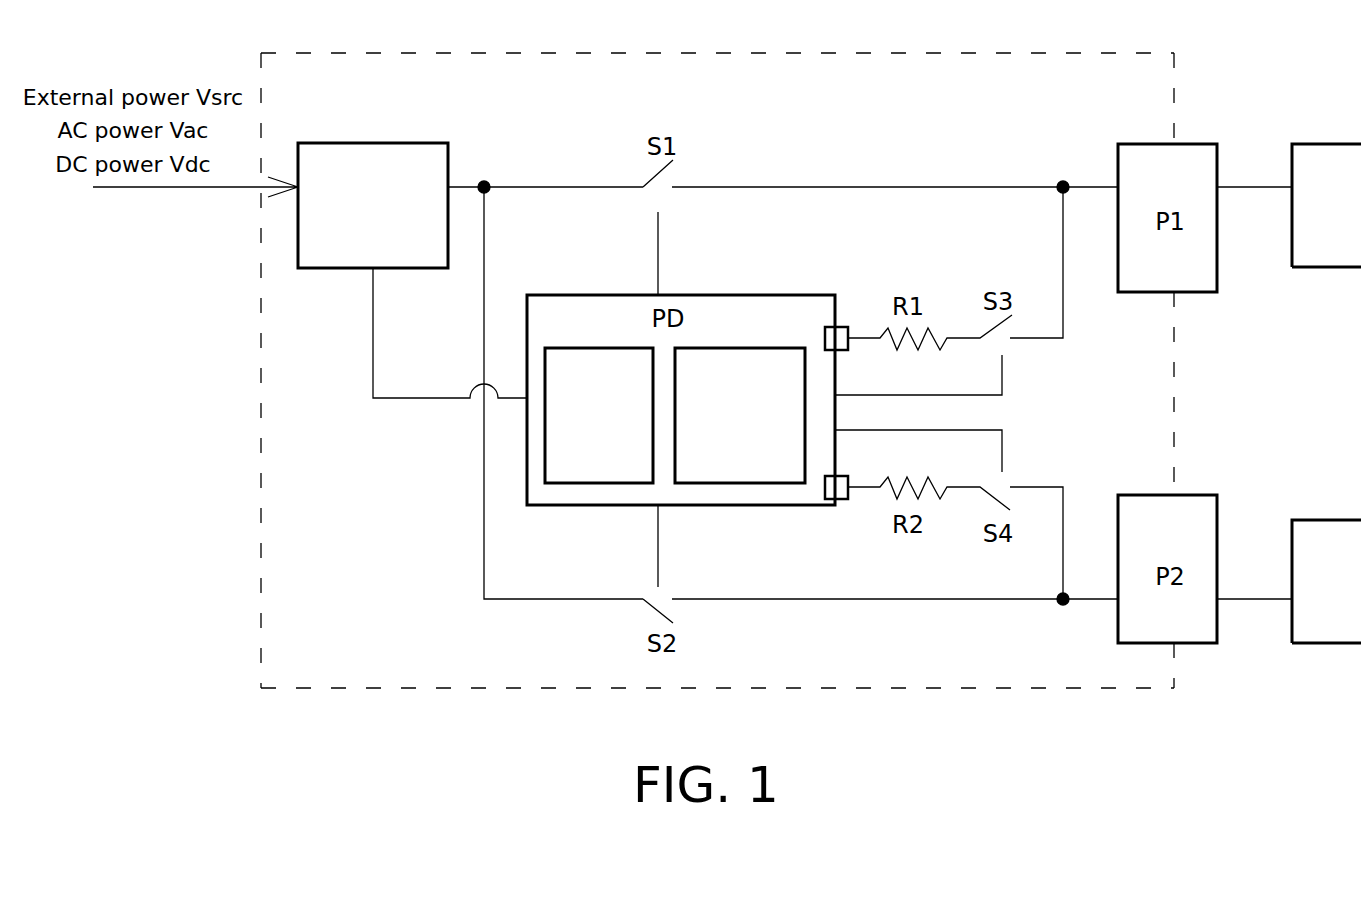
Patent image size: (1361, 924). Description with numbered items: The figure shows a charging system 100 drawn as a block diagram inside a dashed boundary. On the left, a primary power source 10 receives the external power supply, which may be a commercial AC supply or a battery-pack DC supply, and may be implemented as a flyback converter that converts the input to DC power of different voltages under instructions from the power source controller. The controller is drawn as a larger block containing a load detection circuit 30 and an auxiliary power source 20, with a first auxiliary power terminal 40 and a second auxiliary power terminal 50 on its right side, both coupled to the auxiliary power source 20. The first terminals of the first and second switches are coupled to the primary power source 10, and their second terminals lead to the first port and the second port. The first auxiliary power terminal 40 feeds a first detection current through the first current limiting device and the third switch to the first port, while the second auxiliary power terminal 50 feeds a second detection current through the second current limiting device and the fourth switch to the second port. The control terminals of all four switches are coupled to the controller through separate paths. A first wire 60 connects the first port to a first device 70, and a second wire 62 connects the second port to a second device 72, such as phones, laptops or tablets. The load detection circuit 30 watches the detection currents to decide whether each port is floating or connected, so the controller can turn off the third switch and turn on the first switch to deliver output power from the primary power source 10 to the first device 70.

The charging system 100 is at (1094, 53).
The primary power source 10 is at (373, 143).
The auxiliary power source 20 is at (745, 483).
The load detection circuit 30 is at (598, 483).
The first auxiliary power terminal 40 is at (848, 327).
The second auxiliary power terminal 50 is at (848, 499).
The first wire 60 is at (1256, 189).
The second wire 62 is at (1255, 598).
The first device 70 is at (1355, 223).
The second device 72 is at (1355, 598).